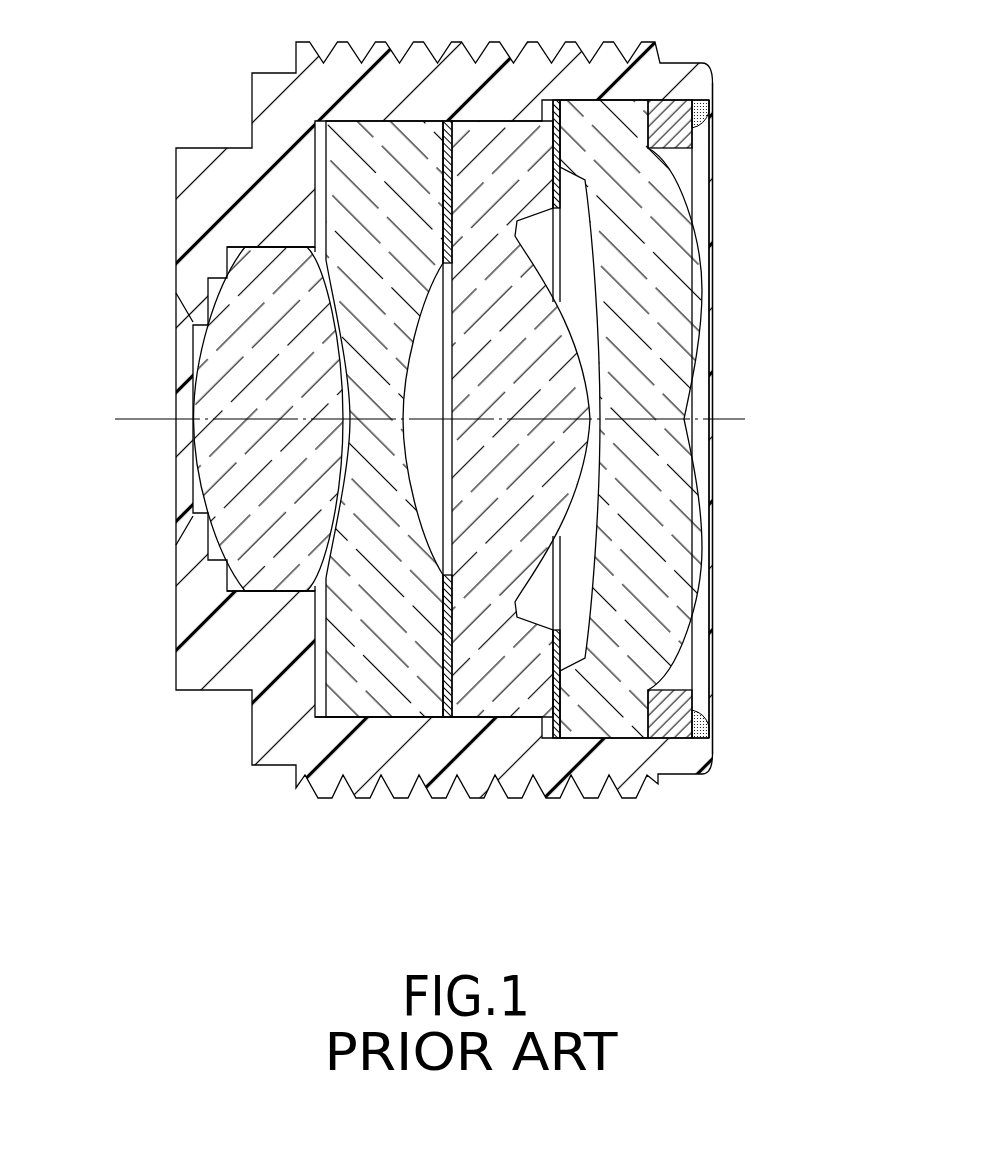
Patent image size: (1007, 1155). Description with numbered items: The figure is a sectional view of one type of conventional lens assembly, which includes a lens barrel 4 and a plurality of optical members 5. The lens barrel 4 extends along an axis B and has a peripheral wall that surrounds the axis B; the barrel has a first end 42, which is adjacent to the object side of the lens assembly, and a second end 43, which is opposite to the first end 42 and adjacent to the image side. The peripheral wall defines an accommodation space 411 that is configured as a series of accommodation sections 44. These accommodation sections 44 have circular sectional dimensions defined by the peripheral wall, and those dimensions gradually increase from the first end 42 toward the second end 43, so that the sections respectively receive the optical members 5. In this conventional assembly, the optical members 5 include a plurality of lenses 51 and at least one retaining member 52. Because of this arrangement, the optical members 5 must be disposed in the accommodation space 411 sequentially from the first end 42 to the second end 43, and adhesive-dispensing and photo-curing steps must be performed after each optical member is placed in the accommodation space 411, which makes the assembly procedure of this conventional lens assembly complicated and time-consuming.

The lens barrel 4 is at (439, 460).
The accommodation space 411 is at (266, 241).
The first end 42 is at (176, 244).
The second end 43 is at (713, 146).
The accommodation sections 44 is at (257, 592).
The optical members 5 is at (426, 525).
The lenses 51 is at (224, 488).
The retaining member 52 is at (682, 703).
The axis B is at (140, 415).